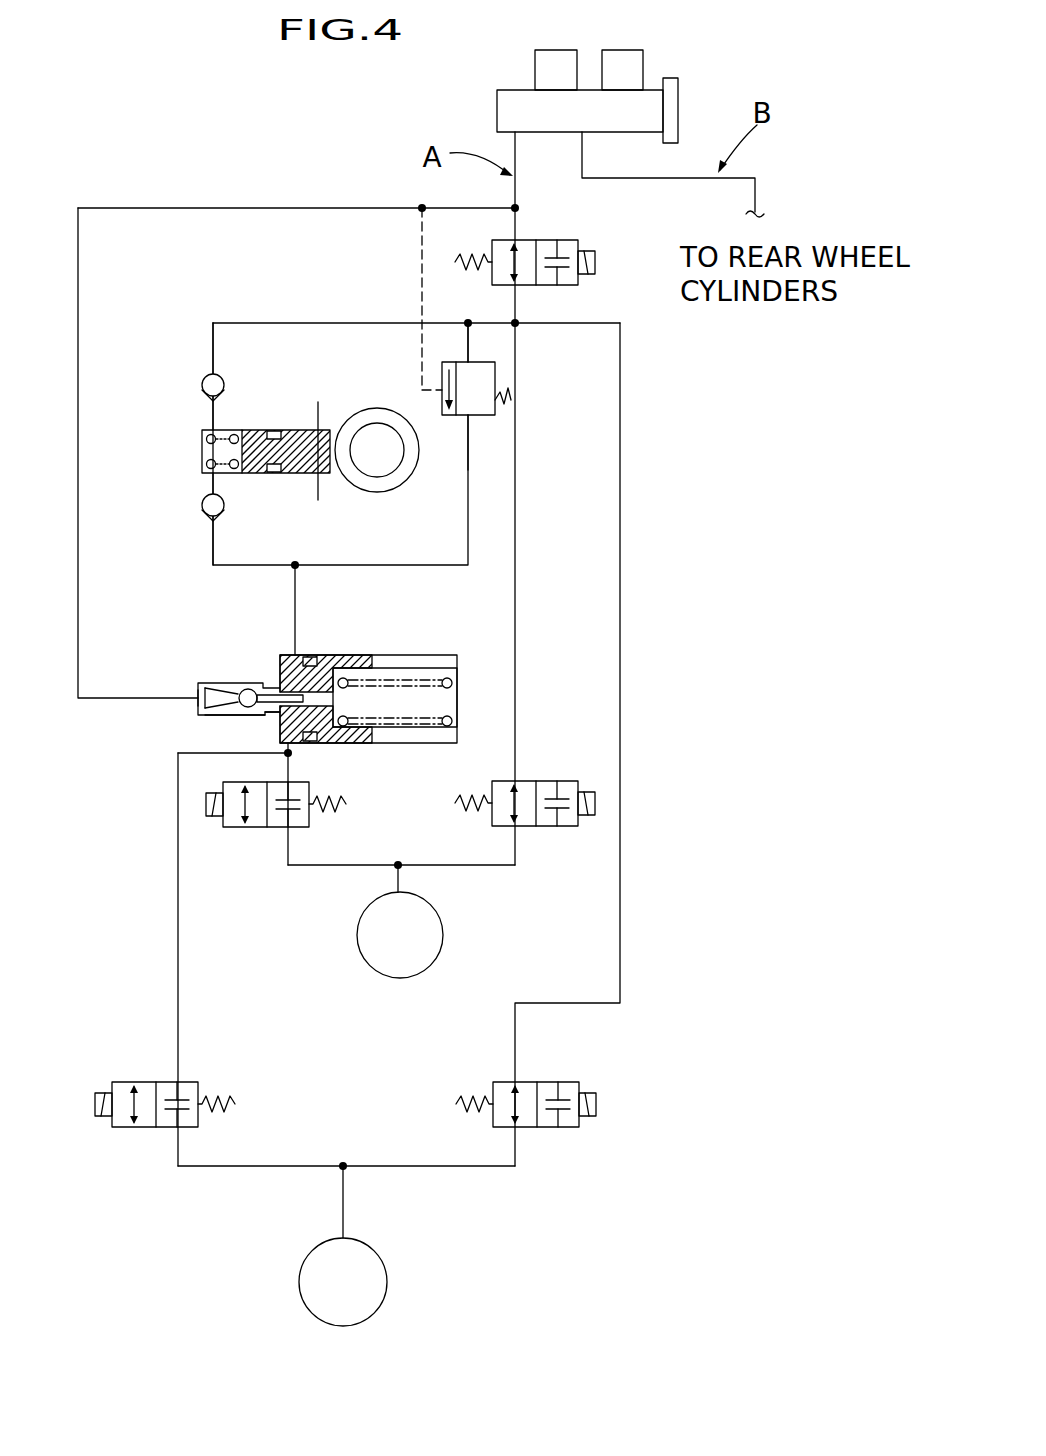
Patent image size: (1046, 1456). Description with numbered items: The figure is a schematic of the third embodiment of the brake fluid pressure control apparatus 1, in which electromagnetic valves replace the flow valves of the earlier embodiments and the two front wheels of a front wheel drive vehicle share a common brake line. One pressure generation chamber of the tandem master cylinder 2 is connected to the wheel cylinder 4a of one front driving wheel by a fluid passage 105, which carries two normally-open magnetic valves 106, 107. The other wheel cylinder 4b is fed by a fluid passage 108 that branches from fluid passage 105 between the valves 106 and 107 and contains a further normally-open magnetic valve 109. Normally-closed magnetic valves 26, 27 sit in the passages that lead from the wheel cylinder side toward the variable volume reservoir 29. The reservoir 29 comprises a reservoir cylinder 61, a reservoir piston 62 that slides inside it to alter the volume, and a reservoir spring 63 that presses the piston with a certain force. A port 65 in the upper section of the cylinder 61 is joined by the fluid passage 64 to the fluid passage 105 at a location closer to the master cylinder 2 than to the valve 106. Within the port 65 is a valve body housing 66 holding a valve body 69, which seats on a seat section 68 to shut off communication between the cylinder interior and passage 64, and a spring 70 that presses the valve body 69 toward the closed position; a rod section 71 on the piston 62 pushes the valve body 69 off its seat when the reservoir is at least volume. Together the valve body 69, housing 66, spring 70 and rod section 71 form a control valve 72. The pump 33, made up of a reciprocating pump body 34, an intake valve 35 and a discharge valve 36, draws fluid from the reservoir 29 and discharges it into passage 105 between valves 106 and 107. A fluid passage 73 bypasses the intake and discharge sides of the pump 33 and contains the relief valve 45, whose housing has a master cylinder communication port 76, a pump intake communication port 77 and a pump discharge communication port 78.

The brake fluid pressure control apparatus 1 is at (702, 390).
The tandem master cylinder 2 is at (511, 89).
The wheel cylinder 4a is at (443, 945).
The wheel cylinder 4b is at (387, 1290).
The normally-closed magnetic valve 26 is at (257, 828).
The normally-closed magnetic valve 27 is at (120, 1128).
The variable volume reservoir 29 is at (277, 687).
The pump 33 is at (256, 430).
The pump body 34 is at (262, 432).
The intake valve 35 is at (205, 500).
The discharge valve 36 is at (205, 378).
The relief valve 45 is at (499, 372).
The reservoir cylinder 61 is at (405, 737).
The reservoir piston 62 is at (345, 660).
The reservoir spring 63 is at (400, 670).
The fluid passage 64 is at (78, 548).
The port 65 is at (266, 724).
The valve body housing 66 is at (200, 712).
The seat section 68 is at (250, 684).
The valve body 69 is at (243, 690).
The spring 70 is at (200, 686).
The rod section 71 is at (278, 690).
The control valve 72 is at (206, 723).
The fluid passage 73 is at (468, 538).
The master cylinder communication port 76 is at (470, 375).
The pump intake communication port 77 is at (463, 418).
The pump discharge communication port 78 is at (470, 345).
The fluid passage 105 is at (516, 480).
The normally-open magnetic valve 106 is at (572, 240).
The normally-open magnetic valve 107 is at (545, 781).
The fluid passage 108 is at (620, 568).
The normally-open magnetic valve 109 is at (560, 1128).